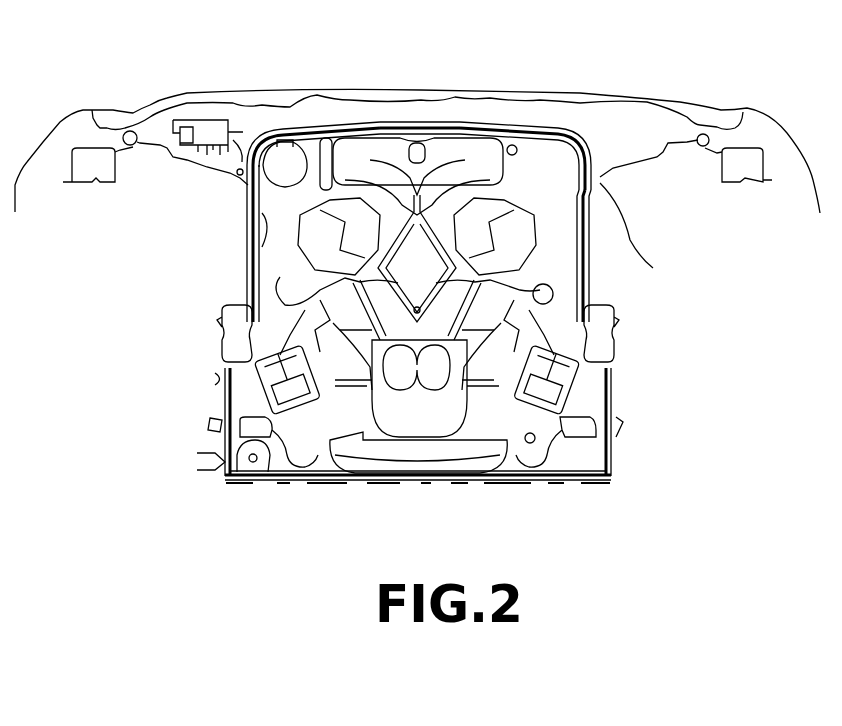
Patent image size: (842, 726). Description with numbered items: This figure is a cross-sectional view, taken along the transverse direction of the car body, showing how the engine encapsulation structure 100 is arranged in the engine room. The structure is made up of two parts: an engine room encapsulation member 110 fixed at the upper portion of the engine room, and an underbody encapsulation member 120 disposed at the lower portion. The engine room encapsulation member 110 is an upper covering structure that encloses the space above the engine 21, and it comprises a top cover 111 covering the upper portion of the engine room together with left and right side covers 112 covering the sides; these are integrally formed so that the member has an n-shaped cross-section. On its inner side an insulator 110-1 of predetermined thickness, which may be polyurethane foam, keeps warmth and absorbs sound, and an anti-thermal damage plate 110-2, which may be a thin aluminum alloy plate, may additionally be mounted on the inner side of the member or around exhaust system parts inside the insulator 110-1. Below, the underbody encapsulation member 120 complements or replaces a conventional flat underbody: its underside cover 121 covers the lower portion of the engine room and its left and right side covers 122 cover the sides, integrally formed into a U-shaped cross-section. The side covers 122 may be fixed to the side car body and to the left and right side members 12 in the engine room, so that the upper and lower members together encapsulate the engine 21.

The engine encapsulation structure 100 is at (612, 400).
The engine room encapsulation member 110 is at (431, 164).
The insulator 110-1 is at (353, 127).
The anti-thermal damage plate 110-2 is at (443, 128).
The top cover 111 is at (528, 125).
The side covers 112 is at (253, 252).
The engine 21 is at (596, 173).
The underbody encapsulation member 120 is at (417, 428).
The underside cover 121 is at (340, 483).
The side covers 122 is at (225, 403).
The side member 12 is at (603, 367).